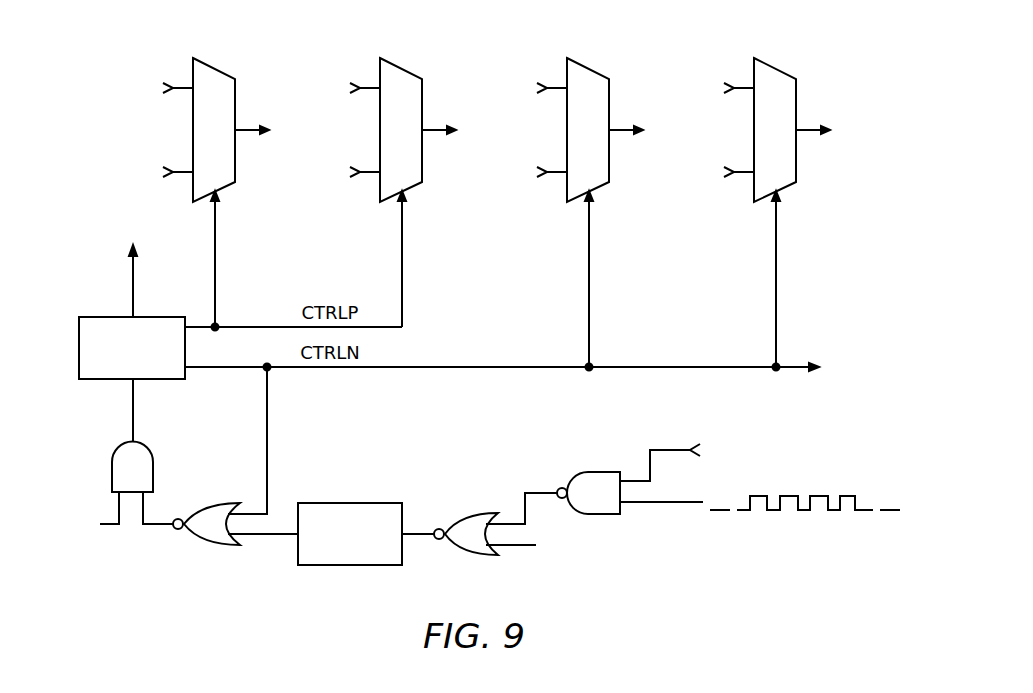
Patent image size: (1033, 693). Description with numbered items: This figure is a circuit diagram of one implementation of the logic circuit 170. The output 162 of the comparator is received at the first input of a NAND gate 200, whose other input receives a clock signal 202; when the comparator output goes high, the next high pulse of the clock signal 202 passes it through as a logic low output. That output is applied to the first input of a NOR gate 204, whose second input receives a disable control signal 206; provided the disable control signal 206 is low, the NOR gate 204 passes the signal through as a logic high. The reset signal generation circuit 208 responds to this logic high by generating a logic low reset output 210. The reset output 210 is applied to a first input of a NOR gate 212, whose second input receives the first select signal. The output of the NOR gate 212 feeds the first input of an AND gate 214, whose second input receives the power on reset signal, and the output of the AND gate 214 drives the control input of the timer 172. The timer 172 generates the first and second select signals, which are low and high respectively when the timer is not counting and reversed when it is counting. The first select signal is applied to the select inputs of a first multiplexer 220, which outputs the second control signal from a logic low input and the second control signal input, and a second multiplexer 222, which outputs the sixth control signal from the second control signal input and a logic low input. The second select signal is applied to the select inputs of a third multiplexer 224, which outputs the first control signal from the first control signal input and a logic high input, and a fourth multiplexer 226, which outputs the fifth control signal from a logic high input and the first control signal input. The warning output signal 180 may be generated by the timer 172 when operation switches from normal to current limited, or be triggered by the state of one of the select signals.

The third multiplexer 224 is at (209, 57).
The fourth multiplexer 226 is at (396, 57).
The first multiplexer 220 is at (583, 57).
The second multiplexer 222 is at (770, 57).
The warning output signal 180 is at (132, 285).
The timer 172 is at (102, 380).
The AND gate 214 is at (110, 465).
The NOR gate 212 is at (212, 545).
The reset output 210 is at (270, 535).
The reset signal generation circuit 208 is at (340, 565).
The NOR gate 204 is at (478, 513).
The disable control signal 206 is at (517, 547).
The NAND gate 200 is at (590, 471).
The output of the comparator 162 is at (670, 449).
The clock signal 202 is at (835, 512).
The logic circuit 170 is at (706, 558).